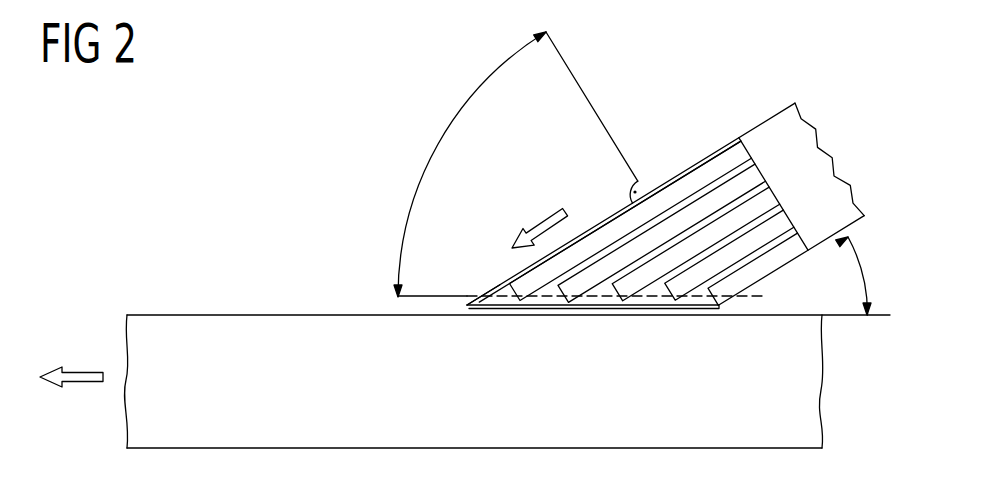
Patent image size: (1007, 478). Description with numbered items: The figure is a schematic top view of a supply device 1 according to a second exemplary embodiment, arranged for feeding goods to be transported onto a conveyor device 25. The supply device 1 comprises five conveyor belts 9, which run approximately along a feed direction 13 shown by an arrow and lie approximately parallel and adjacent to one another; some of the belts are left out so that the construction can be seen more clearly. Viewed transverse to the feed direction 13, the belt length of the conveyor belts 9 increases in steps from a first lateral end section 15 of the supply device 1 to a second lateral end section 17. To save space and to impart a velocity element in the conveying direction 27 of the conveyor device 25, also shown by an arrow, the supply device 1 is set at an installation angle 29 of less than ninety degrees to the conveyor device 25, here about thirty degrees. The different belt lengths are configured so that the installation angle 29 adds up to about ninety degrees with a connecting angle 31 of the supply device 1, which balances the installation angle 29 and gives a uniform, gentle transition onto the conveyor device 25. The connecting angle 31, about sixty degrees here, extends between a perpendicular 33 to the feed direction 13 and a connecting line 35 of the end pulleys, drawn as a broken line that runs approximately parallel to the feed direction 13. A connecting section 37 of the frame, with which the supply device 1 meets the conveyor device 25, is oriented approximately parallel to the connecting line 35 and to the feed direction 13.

The supply device 1 is at (651, 235).
The conveyor belts 9 is at (720, 148).
The feed direction 13 is at (551, 222).
The first lateral end section 15 is at (778, 282).
The second lateral end section 17 is at (494, 266).
The conveyor device 25 is at (258, 315).
The conveying direction 27 is at (80, 372).
The installation angle 29 is at (867, 268).
The connecting angle 31 is at (442, 136).
The perpendicular 33 is at (578, 84).
The connecting line 35 is at (742, 299).
The connecting section 37 is at (495, 321).